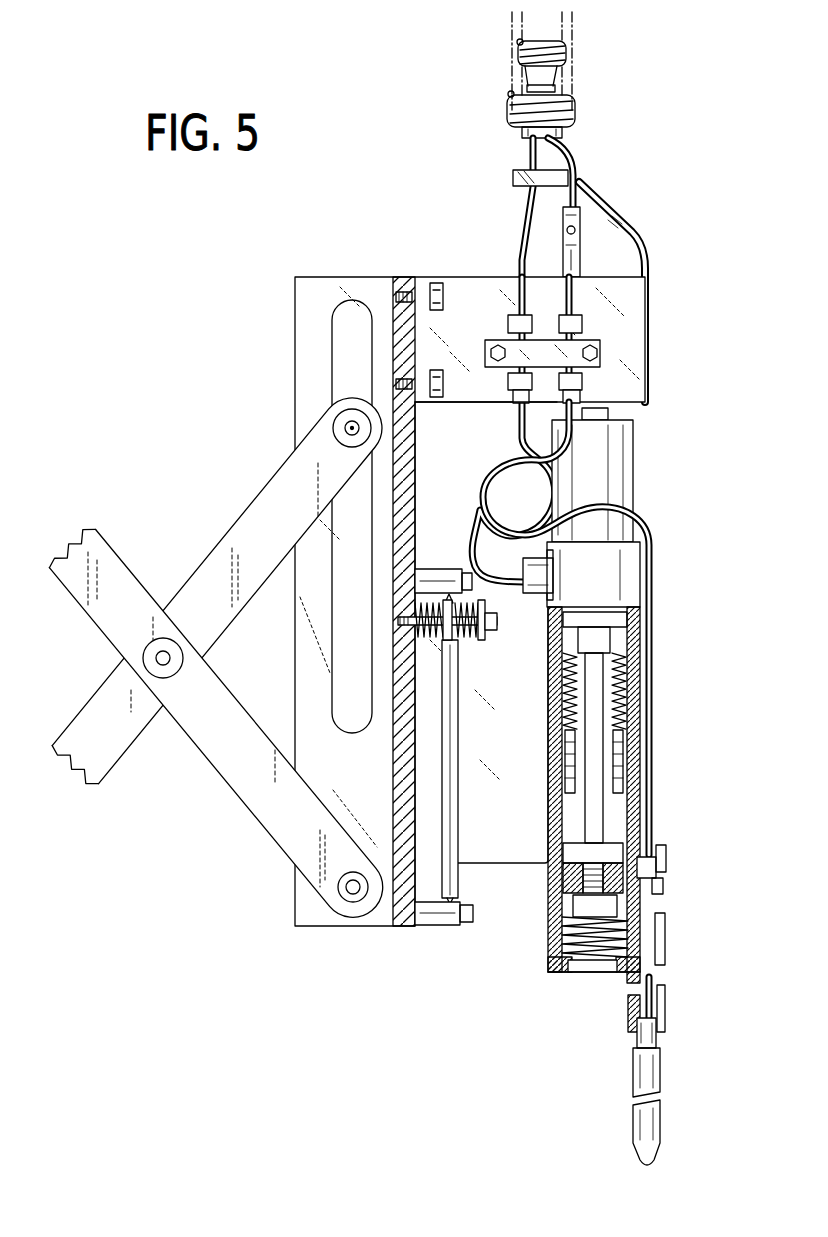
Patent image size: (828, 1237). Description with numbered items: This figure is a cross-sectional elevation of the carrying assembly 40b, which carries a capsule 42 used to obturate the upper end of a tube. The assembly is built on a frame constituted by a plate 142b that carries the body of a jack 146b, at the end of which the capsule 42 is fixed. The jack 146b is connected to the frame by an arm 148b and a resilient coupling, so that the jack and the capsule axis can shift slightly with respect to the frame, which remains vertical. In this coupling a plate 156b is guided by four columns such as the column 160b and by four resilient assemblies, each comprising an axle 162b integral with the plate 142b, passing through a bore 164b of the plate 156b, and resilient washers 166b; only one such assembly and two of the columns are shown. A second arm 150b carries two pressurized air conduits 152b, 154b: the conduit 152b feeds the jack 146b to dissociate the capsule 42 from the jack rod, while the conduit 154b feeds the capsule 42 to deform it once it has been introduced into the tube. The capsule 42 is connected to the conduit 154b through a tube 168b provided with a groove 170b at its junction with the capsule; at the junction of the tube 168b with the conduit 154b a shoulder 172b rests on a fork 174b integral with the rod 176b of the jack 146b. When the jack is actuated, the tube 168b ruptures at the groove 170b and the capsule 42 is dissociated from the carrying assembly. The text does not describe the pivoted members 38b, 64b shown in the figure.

The support arm 38b is at (110, 549).
The carrying assembly 40b is at (647, 483).
The capsule 42 is at (640, 1123).
The lever arm 64b is at (190, 723).
The plate 142b is at (403, 900).
The body of a jack 146b is at (640, 648).
The arm 148b is at (497, 863).
The arm 150b is at (467, 300).
The pressurized air conduit 152b is at (523, 440).
The pressurized air conduit 154b is at (670, 531).
The plate 156b is at (510, 791).
The column 160b is at (440, 568).
The axle 162b is at (385, 659).
The bore 164b is at (437, 628).
The resilient washers 166b is at (480, 637).
The tube 168b is at (643, 943).
The groove 170b is at (640, 1012).
The shoulder 172b is at (653, 848).
The fork 174b is at (658, 887).
The rod of jack 176b is at (593, 757).